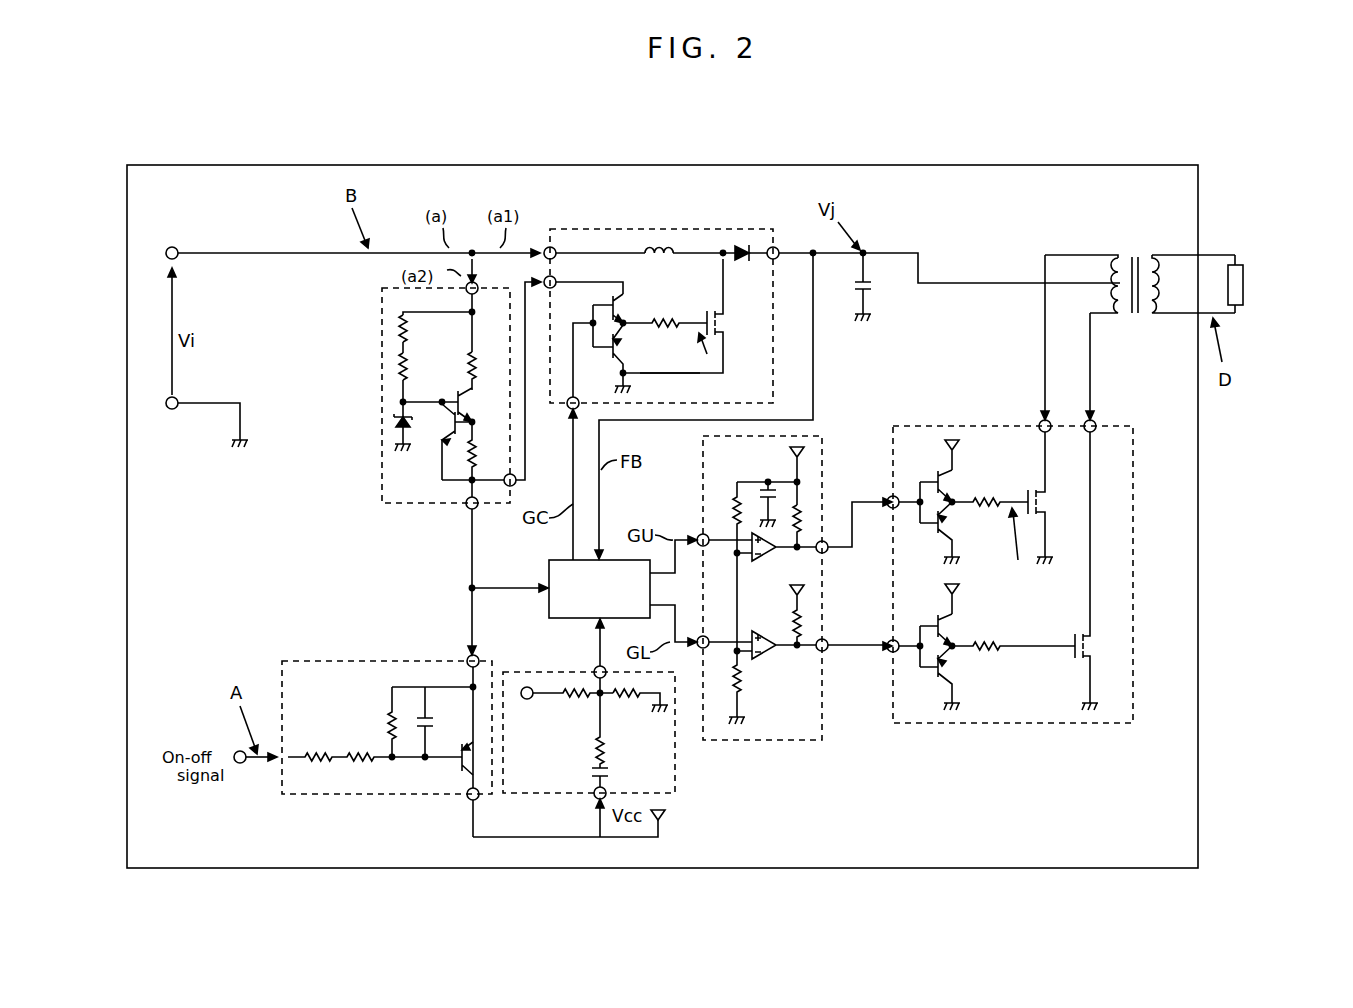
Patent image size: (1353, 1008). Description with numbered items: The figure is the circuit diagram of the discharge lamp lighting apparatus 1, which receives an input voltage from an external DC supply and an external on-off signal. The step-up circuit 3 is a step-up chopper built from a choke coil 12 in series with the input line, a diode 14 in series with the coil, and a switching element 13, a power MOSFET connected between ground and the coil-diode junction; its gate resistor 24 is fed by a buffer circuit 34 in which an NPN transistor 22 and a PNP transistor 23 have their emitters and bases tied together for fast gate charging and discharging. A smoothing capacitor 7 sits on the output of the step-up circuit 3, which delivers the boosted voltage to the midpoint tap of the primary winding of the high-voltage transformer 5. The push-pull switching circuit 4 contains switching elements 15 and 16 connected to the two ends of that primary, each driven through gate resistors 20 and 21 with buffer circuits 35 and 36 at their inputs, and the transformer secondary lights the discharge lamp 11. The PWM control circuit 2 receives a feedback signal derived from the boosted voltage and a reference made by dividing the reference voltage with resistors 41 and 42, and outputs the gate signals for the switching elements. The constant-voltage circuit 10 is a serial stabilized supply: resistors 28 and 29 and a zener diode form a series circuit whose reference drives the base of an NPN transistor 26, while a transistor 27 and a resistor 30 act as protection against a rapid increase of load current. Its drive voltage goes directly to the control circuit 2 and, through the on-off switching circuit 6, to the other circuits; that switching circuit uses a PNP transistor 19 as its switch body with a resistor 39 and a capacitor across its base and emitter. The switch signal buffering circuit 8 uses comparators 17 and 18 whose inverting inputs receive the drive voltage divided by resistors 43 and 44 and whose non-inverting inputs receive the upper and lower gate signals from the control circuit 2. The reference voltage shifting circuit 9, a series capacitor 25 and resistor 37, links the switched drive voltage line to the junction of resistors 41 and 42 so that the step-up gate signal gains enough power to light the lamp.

The discharge lamp lighting apparatus 1 is at (876, 158).
The PWM control circuit 2 is at (540, 602).
The step-up circuit 3 is at (590, 228).
The push-pull switching circuit 4 is at (911, 424).
The high-voltage transformer 5 is at (1135, 256).
The on-off switching circuit 6 is at (298, 660).
The smoothing capacitor 7 is at (868, 252).
The switch signal buffering circuit 8 is at (803, 743).
The reference voltage shifting circuit 9 is at (677, 780).
The constant-voltage circuit 10 is at (398, 287).
The discharge lamp 11 is at (1240, 262).
The choke coil 12 is at (664, 258).
The switching element 13 is at (724, 324).
The diode 14 is at (742, 262).
The switching element 15 is at (1042, 506).
The switching element 16 is at (1084, 652).
The comparator 17 is at (762, 558).
The comparator 18 is at (756, 672).
The PNP transistor 19 is at (460, 770).
The gate resistor 20 is at (990, 516).
The gate resistor 21 is at (1013, 634).
The NPN transistor 22 is at (622, 304).
The PNP transistor 23 is at (624, 358).
The gate resistor 24 is at (666, 320).
The capacitor 25 is at (611, 776).
The NPN transistor 26 is at (464, 406).
The transistor 27 is at (442, 440).
The resistor 28 is at (417, 328).
The resistor 29 is at (417, 367).
The resistor 30 is at (485, 459).
The buffer circuit 34 is at (647, 340).
The buffer circuit 35 is at (949, 480).
The buffer circuit 36 is at (949, 672).
The resistor 37 is at (585, 723).
The resistor 39 is at (376, 722).
The resistor 41 is at (573, 707).
The resistor 42 is at (640, 707).
The resistor 43 is at (723, 517).
The resistor 44 is at (725, 687).